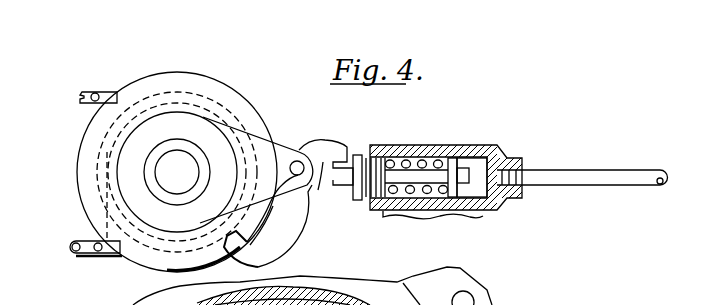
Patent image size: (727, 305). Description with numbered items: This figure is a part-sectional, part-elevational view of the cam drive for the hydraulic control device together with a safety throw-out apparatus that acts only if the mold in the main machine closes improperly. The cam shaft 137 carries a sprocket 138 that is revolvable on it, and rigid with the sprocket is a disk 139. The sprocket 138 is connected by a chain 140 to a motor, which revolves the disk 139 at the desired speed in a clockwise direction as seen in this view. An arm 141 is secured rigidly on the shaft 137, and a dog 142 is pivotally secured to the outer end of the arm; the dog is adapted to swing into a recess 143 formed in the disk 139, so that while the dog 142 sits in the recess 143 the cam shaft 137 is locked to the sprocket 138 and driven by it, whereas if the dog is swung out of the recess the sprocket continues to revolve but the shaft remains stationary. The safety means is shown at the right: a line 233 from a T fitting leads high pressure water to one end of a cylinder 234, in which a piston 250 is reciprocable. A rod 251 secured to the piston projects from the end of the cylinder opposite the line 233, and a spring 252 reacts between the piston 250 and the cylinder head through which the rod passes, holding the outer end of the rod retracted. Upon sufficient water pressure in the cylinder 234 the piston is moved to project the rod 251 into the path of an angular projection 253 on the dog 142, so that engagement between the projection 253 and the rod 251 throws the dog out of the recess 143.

The cam shaft 137 is at (177, 172).
The sprocket 138 is at (107, 152).
The disk 139 is at (255, 123).
The chain 140 is at (95, 93).
The arm 141 is at (262, 193).
The dog 142 is at (240, 255).
The recess 143 is at (173, 268).
The line 233 is at (623, 176).
The cylinder 234 is at (489, 145).
The piston 250 is at (457, 160).
The rod 251 is at (400, 167).
The spring 252 is at (428, 193).
The angular projection 253 is at (333, 148).